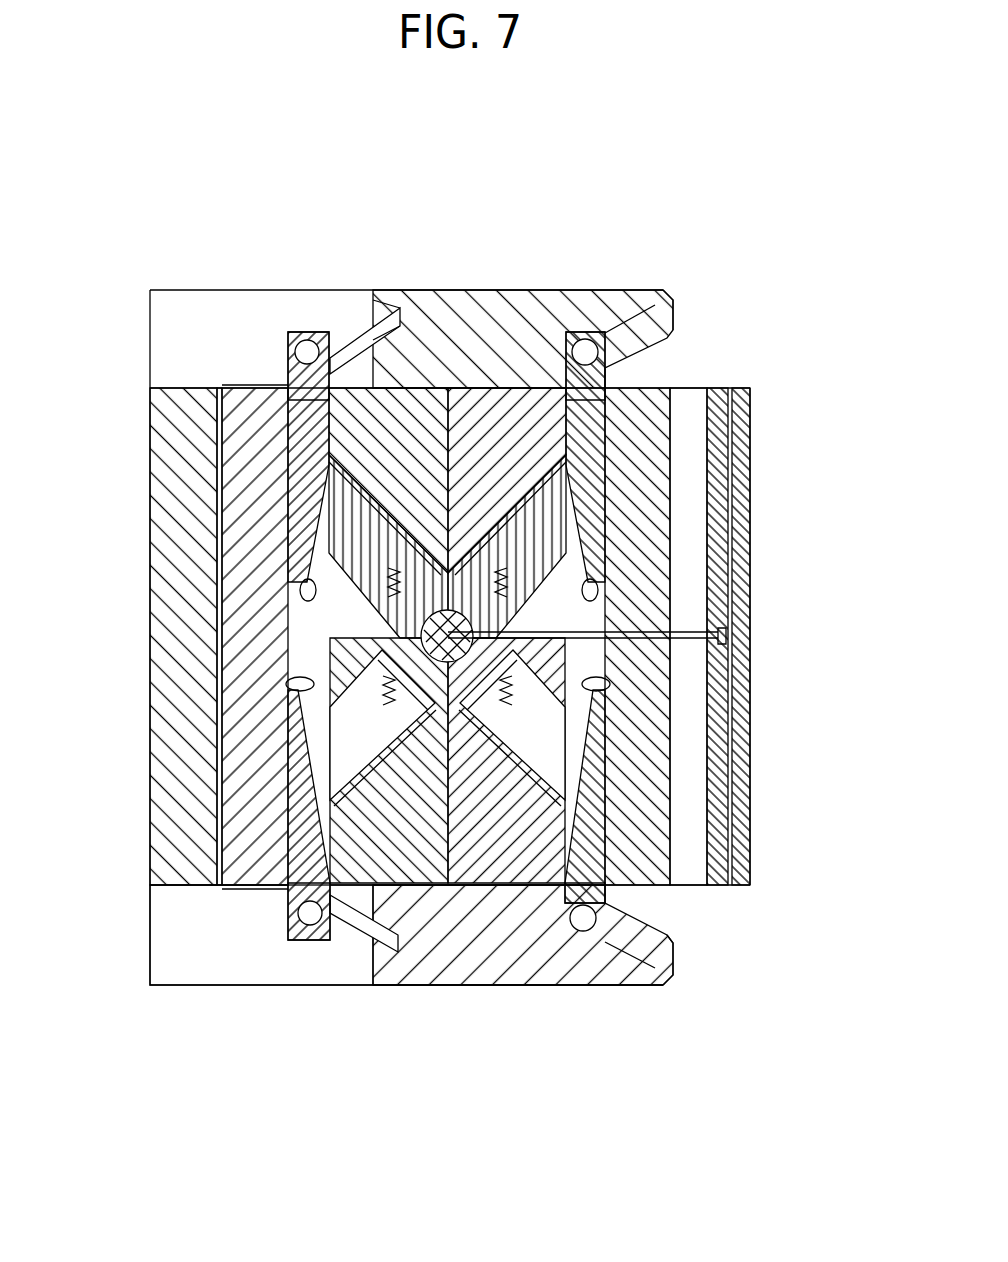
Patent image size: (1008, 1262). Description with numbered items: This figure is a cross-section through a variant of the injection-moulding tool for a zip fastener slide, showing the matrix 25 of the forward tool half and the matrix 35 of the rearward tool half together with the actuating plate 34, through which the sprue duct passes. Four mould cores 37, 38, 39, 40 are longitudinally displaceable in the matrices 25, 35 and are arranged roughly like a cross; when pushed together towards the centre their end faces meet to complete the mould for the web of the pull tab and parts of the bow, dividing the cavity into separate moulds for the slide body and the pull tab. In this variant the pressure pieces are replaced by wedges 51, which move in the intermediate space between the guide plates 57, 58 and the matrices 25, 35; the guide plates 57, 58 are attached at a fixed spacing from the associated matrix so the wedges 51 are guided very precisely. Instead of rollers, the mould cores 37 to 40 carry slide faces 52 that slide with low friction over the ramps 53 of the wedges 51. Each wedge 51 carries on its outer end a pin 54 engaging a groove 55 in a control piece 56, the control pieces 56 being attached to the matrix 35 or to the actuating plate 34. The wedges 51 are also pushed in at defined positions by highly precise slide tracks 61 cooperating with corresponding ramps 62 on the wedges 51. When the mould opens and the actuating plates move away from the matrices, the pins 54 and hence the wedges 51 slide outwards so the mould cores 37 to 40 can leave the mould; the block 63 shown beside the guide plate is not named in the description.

The matrix 25 is at (238, 888).
The actuating plate 34 is at (190, 627).
The matrix 35 is at (425, 950).
The mould core 37 is at (510, 547).
The mould core 38 is at (547, 770).
The mould core 39 is at (340, 525).
The mould core 40 is at (352, 830).
The wedge 51 is at (287, 390).
The slide face 52 is at (322, 482).
The ramp 53 is at (290, 585).
The pin 54 is at (300, 338).
The groove 55 is at (372, 322).
The control piece 56 is at (172, 307).
The guide plate 57 is at (240, 862).
The guide plate 58 is at (673, 853).
The slide track 61 is at (418, 345).
The ramp 62 is at (592, 348).
The side block 63 is at (610, 473).